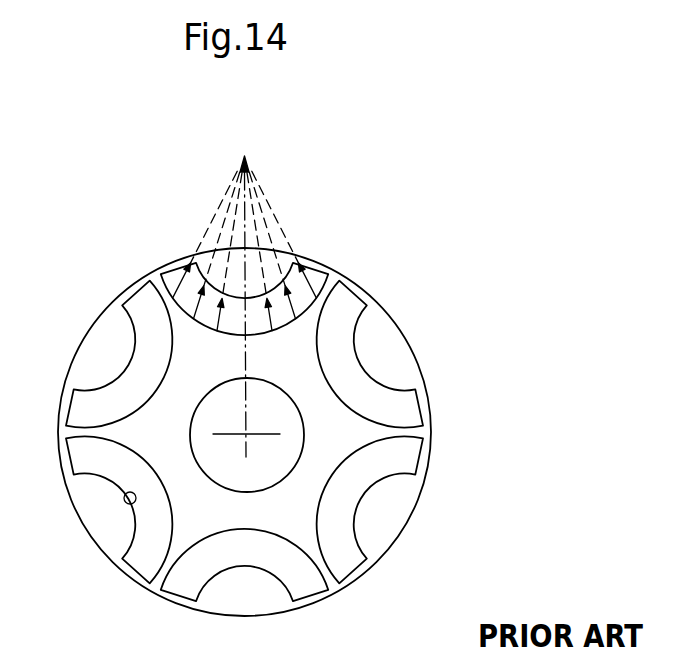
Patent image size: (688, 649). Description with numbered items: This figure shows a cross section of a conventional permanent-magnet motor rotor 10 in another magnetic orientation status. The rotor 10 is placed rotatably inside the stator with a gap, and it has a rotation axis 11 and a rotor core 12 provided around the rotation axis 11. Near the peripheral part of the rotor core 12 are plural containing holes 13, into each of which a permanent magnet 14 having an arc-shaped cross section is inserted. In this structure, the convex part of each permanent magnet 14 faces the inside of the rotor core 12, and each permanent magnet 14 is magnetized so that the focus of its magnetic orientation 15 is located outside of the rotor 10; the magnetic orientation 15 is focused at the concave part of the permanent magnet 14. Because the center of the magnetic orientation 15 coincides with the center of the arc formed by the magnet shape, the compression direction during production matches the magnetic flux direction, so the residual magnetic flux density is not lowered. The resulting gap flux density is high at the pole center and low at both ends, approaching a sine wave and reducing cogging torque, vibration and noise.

The rotor 10 is at (370, 293).
The rotation axis 11 is at (285, 420).
The rotor core 12 is at (320, 478).
The containing hole 13 is at (132, 506).
The permanent magnet 14 is at (130, 381).
The magnetic orientation 15 is at (210, 305).